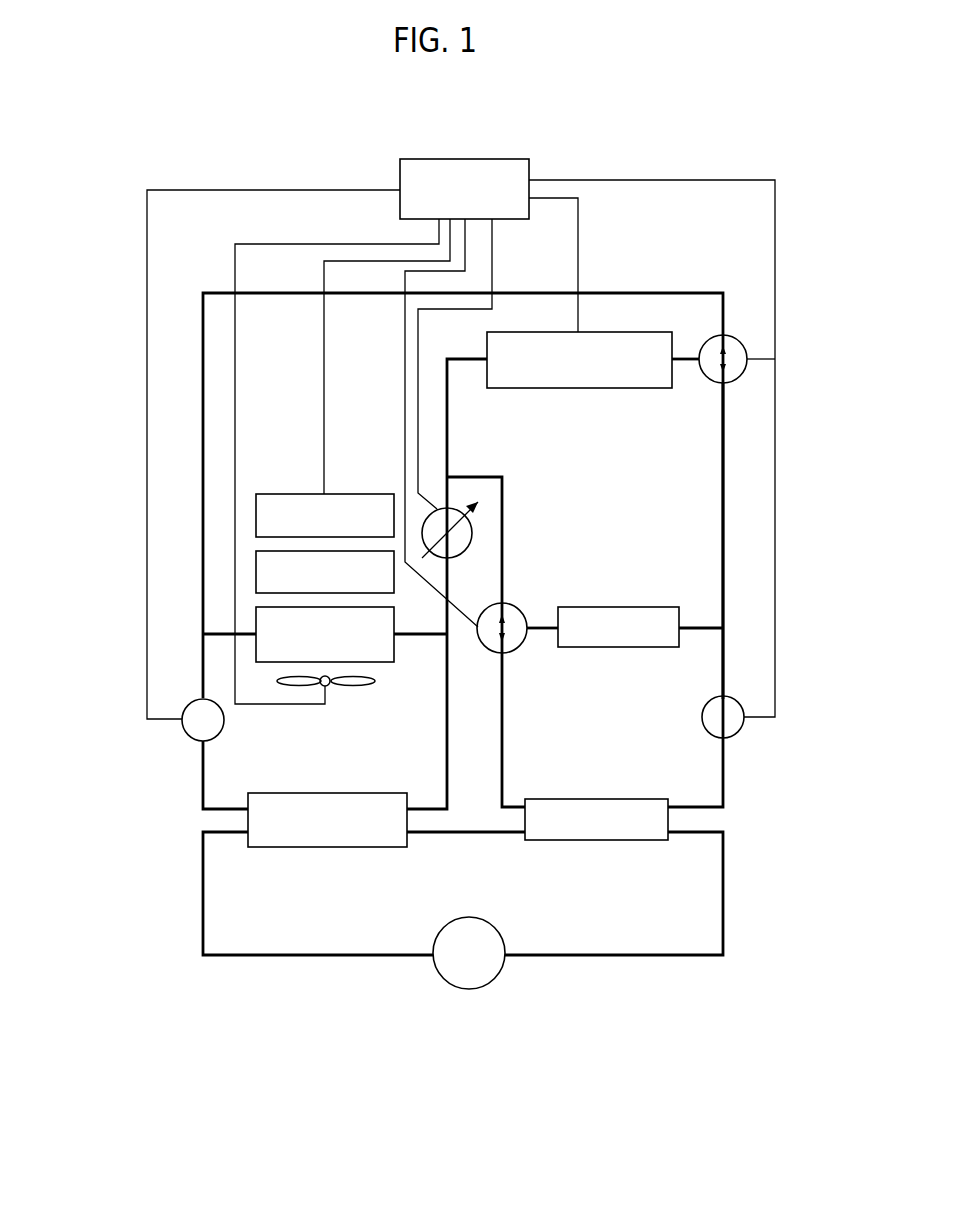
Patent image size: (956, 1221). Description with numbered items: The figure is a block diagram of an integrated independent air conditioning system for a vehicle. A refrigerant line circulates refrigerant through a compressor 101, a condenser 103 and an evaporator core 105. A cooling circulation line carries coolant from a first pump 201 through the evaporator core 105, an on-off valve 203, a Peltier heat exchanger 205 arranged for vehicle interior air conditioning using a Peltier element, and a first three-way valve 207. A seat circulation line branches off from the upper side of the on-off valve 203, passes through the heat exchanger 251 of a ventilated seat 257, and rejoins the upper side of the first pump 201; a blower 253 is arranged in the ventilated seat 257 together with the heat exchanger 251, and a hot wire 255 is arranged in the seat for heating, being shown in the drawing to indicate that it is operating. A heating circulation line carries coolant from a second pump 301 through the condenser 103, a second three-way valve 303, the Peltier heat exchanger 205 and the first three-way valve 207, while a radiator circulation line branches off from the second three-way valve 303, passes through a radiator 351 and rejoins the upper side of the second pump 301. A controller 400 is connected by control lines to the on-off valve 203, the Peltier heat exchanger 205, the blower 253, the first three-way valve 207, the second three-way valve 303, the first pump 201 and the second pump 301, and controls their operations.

The controller 400 is at (497, 158).
The Peltier heat exchanger 205 is at (650, 388).
The first 3-way valve 207 is at (712, 337).
The on-off valve 203 is at (472, 532).
The second 3-way valve 303 is at (520, 607).
The radiator 351 is at (617, 647).
The hot wire 255 is at (256, 513).
The ventilated seat 257 is at (256, 571).
The heat exchanger 251 is at (256, 646).
The blower 253 is at (353, 685).
The first pump 201 is at (188, 735).
The second pump 301 is at (738, 733).
The evaporator core 105 is at (305, 847).
The condenser 103 is at (590, 840).
The compressor 101 is at (467, 989).